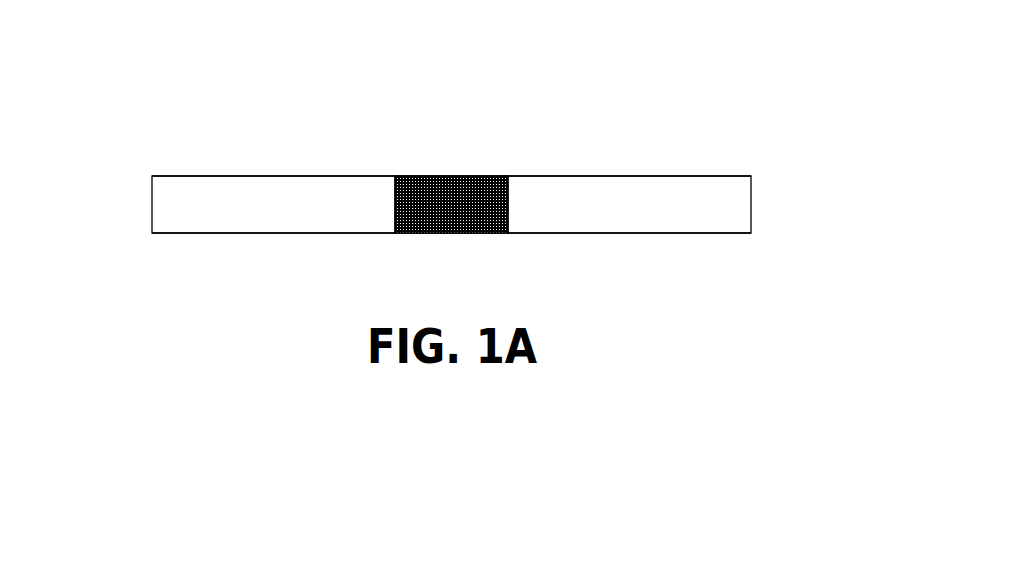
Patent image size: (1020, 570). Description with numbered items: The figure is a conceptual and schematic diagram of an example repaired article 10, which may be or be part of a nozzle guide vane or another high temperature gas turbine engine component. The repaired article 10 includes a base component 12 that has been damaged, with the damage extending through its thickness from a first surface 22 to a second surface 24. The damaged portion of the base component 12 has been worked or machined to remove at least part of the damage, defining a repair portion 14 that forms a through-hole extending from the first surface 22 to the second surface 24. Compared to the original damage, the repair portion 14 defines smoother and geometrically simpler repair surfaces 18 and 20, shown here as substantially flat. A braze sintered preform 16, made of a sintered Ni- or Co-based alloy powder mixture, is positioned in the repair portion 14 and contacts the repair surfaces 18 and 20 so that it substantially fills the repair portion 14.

The repaired article 10 is at (148, 60).
The base component 12 is at (152, 205).
The repair portion 14 is at (426, 138).
The braze sintered preform 16 is at (483, 192).
The repair surface 18 is at (392, 198).
The repair surface 20 is at (508, 208).
The first surface 22 is at (650, 176).
The second surface 24 is at (677, 233).